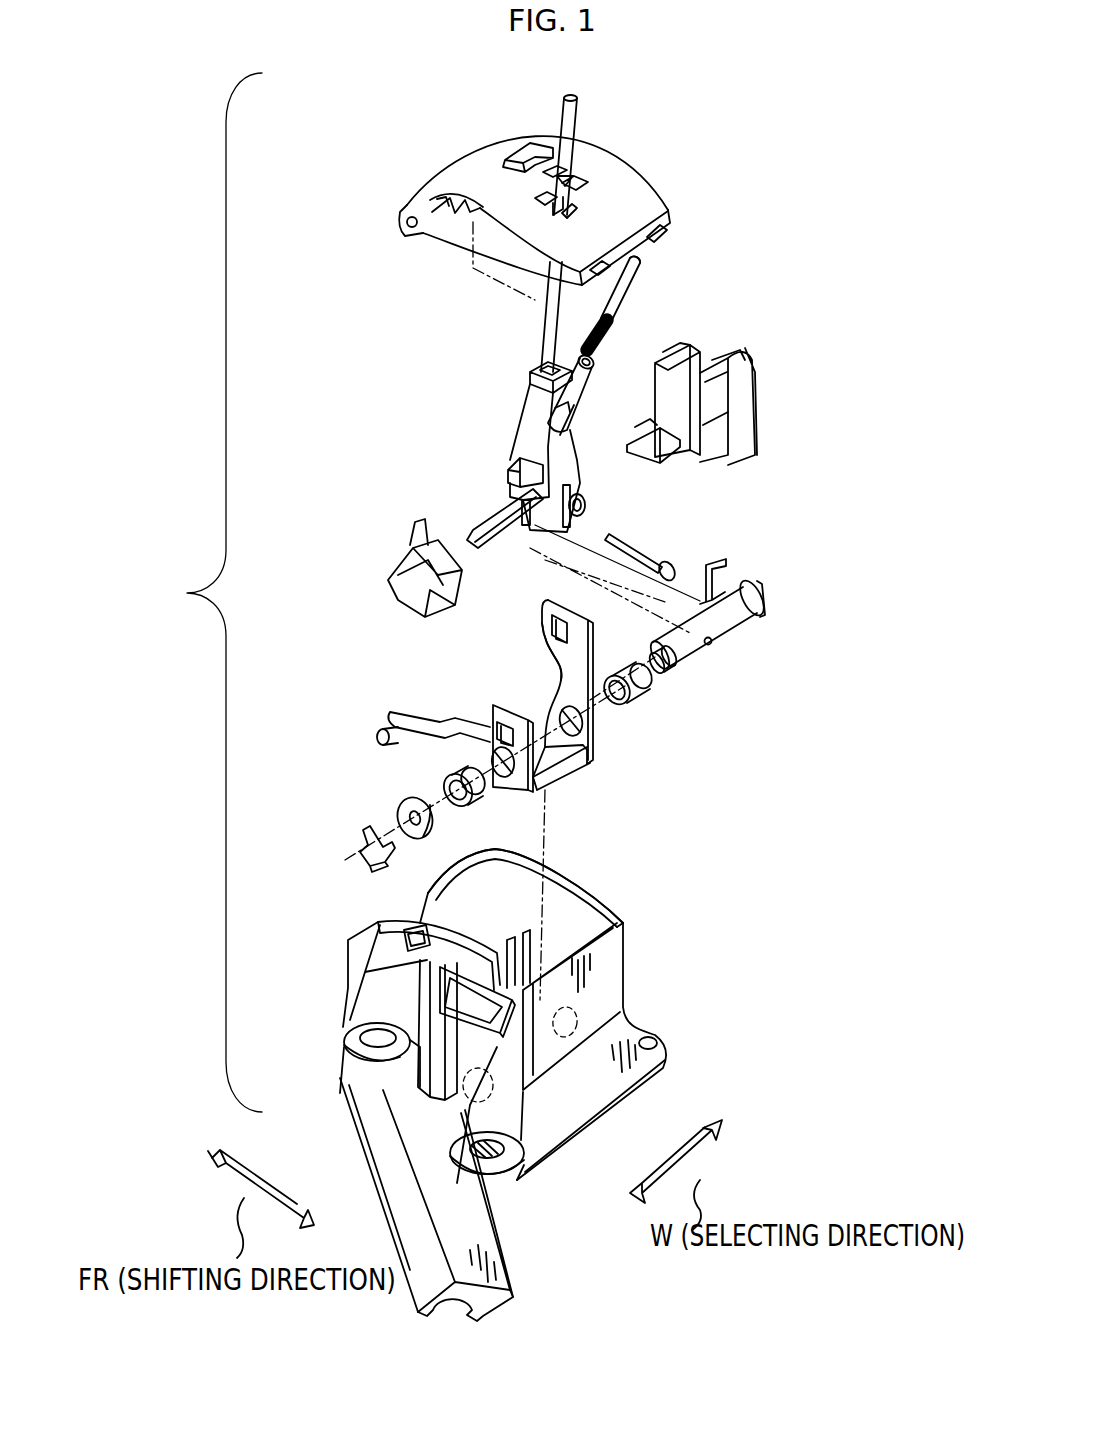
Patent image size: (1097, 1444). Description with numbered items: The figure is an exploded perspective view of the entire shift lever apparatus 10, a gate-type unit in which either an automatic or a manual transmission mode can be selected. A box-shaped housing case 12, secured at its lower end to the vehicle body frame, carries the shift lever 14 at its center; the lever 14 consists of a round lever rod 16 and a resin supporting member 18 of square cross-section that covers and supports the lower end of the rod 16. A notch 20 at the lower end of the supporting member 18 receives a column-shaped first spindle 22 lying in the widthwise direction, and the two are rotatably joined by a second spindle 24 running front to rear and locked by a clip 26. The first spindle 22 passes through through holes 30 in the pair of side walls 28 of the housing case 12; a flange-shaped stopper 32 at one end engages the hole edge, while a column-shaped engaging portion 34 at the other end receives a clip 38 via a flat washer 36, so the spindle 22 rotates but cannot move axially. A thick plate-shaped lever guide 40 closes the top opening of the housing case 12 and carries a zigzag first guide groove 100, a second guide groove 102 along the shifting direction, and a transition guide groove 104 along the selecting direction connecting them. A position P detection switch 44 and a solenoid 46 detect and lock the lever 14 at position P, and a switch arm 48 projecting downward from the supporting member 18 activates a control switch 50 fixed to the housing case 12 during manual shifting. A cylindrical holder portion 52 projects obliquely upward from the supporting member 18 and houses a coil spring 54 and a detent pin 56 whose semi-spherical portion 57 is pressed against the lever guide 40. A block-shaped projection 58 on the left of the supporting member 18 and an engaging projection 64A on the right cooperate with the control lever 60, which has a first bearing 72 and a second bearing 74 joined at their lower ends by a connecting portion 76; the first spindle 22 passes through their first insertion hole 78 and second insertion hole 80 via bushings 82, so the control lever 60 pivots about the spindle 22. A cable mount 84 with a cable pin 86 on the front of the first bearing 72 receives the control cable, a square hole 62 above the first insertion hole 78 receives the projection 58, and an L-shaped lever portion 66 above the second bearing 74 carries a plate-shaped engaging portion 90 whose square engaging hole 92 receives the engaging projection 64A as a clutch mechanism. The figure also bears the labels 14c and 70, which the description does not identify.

The shift lever apparatus 10 is at (342, 486).
The housing case 12 is at (590, 1092).
The shift lever 14 is at (560, 458).
The lever lower portion 14c is at (692, 1037).
The lever rod 16 is at (561, 303).
The supporting member 18 is at (586, 492).
The notch 20 is at (530, 528).
The first spindle 22 is at (731, 614).
The second spindle 24 is at (640, 557).
The clip 26 is at (727, 567).
The side walls 28 is at (592, 892).
The through holes 30 is at (578, 1015).
The stopper 32 is at (758, 586).
The engaging portion 34 is at (662, 673).
The flat washer 36 is at (402, 808).
The clip 38 is at (362, 836).
The lever guide 40 is at (534, 183).
The position P detection switch 44 is at (641, 422).
The solenoid 46 is at (742, 425).
The switch arm 48 is at (500, 535).
The control switch 50 is at (392, 575).
The holder portion 52 is at (568, 407).
The coil spring 54 is at (606, 335).
The detent pin 56 is at (636, 262).
The semi-spherical portion 57 is at (635, 259).
The projection 58 is at (516, 467).
The control lever 60 is at (550, 703).
The hole 62 is at (497, 713).
The engaging projection 64A is at (594, 386).
The lever portion 66 is at (558, 675).
The stopper 70 is at (455, 990).
The first bearing 72 is at (530, 794).
The second bearing 74 is at (590, 758).
The connecting portion 76 is at (550, 770).
The first insertion hole 78 is at (505, 778).
The second insertion hole 80 is at (584, 728).
The bushings 82 is at (625, 670).
The cable mount 84 is at (400, 717).
The cable pin 86 is at (378, 738).
The engaging portion 90 is at (575, 622).
The engaging hole 92 is at (553, 627).
The first guide groove 100 is at (512, 152).
The second guide groove 102 is at (577, 212).
The transition guide groove 104 is at (578, 178).